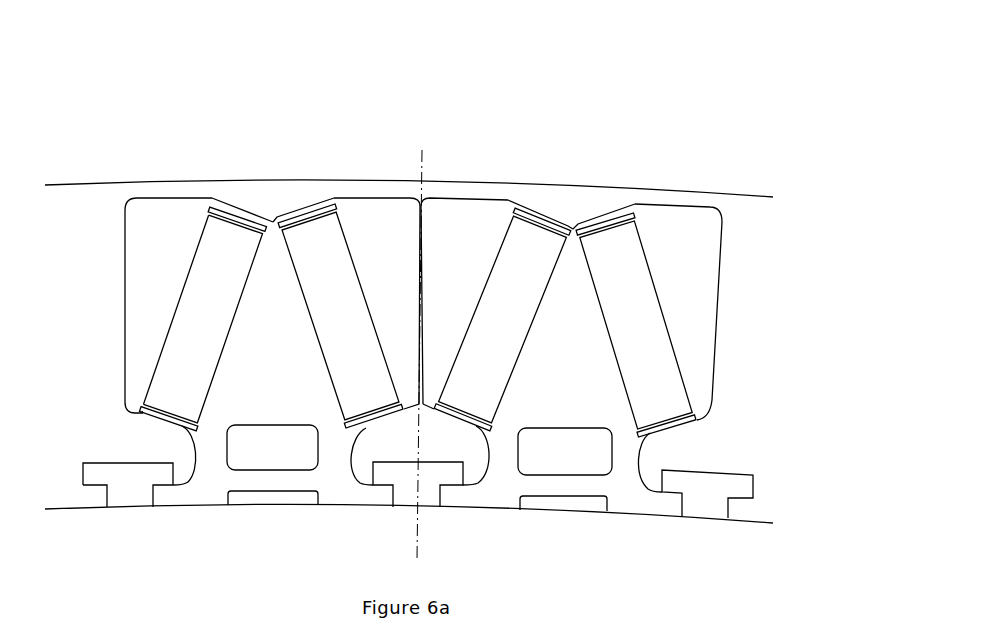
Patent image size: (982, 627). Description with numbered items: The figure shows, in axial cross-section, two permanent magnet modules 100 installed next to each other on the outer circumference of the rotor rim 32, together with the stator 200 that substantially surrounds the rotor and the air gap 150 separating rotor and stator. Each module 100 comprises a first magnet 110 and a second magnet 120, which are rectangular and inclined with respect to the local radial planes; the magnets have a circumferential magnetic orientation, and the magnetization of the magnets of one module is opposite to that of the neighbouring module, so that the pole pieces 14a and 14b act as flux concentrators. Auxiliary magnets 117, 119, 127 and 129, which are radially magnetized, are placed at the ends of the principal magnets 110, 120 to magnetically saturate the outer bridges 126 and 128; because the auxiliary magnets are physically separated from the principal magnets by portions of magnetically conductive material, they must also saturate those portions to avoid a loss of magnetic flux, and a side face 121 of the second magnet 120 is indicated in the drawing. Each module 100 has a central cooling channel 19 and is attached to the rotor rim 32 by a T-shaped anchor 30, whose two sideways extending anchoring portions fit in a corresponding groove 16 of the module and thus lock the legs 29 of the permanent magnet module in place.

The permanent magnet module 100 is at (407, 298).
The stator 200 is at (409, 151).
The air gap 150 is at (390, 305).
The second magnet 120 is at (201, 277).
The side face of first magnet 121 is at (137, 309).
The outer bridge 126 is at (254, 180).
The auxiliary magnet 127 is at (234, 174).
The outer bridge 128 is at (107, 394).
The auxiliary magnet 129 is at (127, 381).
The first magnet 110 is at (340, 275).
The auxiliary magnet 117 is at (305, 150).
The auxiliary magnet 119 is at (378, 490).
The pole piece 14a is at (565, 291).
The pole piece 14b is at (227, 324).
The groove 16 is at (362, 456).
The central cooling channel 19 is at (419, 500).
The leg 29 is at (418, 516).
The T-shaped anchor 30 is at (127, 516).
The rotor rim 32 is at (409, 543).